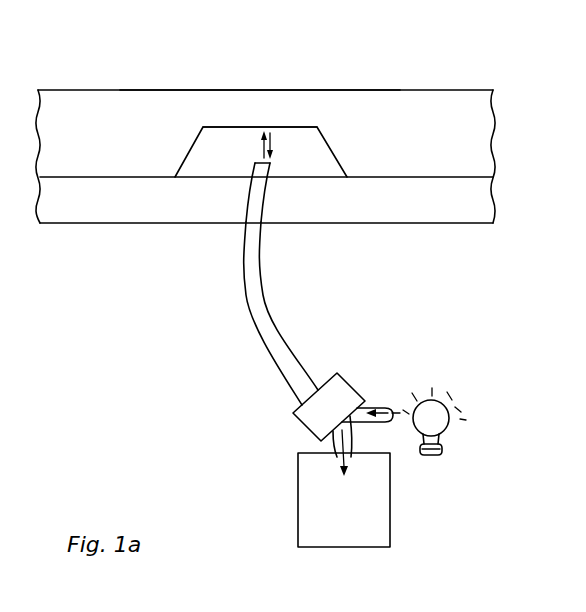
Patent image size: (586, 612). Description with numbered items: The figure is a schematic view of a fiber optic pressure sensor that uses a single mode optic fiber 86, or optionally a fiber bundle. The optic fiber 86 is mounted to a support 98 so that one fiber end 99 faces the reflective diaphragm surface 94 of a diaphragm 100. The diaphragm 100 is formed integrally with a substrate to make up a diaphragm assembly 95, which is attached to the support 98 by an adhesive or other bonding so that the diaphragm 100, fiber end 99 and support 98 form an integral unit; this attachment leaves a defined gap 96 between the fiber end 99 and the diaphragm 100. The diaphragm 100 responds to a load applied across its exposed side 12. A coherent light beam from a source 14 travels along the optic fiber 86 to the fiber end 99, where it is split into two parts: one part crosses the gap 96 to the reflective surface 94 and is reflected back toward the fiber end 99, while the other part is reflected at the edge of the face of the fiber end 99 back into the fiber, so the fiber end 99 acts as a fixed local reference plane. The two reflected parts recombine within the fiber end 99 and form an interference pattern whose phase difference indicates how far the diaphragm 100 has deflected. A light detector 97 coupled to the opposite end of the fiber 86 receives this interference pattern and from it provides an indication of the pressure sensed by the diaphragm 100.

The exposed side 12 is at (242, 81).
The source 14 is at (443, 447).
The optic fiber 86 is at (274, 295).
The reflective diaphragm surface 94 is at (232, 142).
The diaphragm assembly 95 is at (507, 130).
The gap 96 is at (318, 161).
The light detector 97 is at (358, 514).
The support 98 is at (429, 208).
The fiber end 99 is at (242, 166).
The diaphragm 100 is at (277, 96).